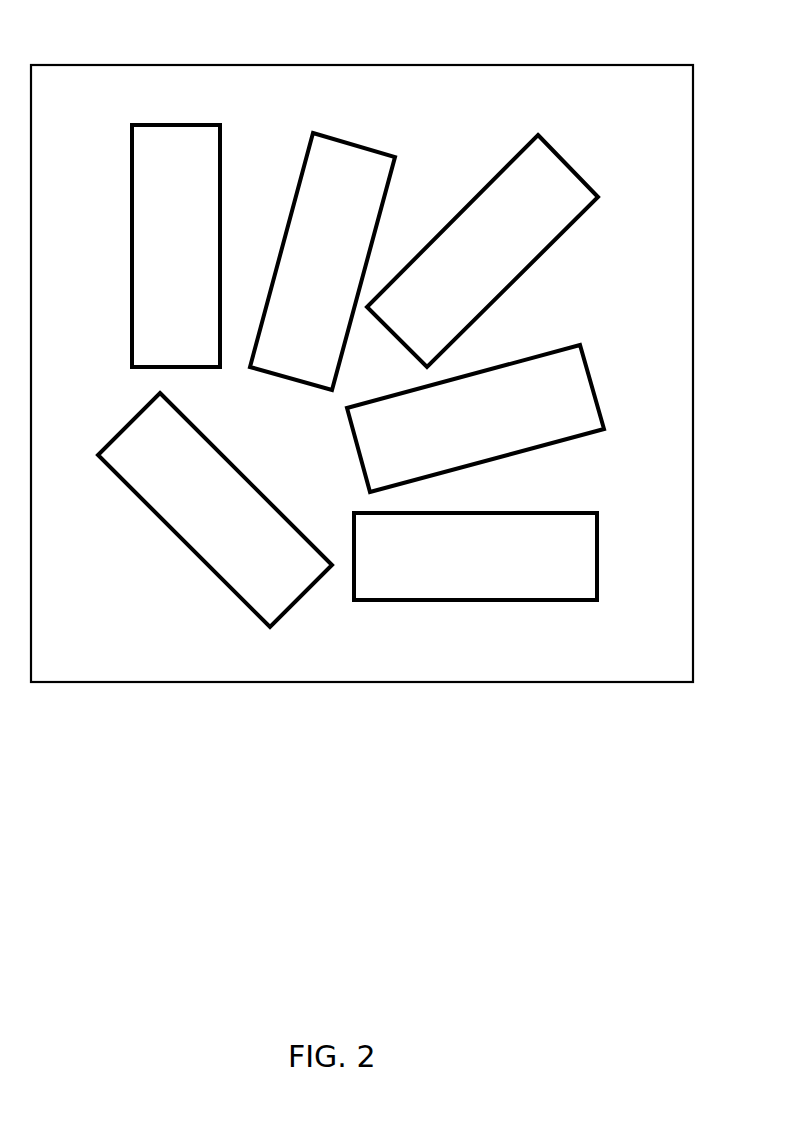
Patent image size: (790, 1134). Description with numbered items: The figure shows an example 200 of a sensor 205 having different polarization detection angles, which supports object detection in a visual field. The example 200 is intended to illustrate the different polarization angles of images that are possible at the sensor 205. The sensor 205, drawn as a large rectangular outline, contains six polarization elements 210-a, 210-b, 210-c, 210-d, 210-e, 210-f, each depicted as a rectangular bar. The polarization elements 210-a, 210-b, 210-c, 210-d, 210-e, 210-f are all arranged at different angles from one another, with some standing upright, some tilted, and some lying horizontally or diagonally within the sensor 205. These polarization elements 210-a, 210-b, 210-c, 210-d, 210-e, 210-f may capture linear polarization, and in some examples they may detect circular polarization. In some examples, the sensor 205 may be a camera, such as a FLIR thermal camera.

The example 200 is at (375, 517).
The sensor 205 is at (330, 65).
The polarization element 210-a is at (222, 168).
The polarization element 210-b is at (370, 146).
The polarization element 210-c is at (577, 172).
The polarization element 210-d is at (547, 352).
The polarization element 210-e is at (562, 512).
The polarization element 210-f is at (245, 475).